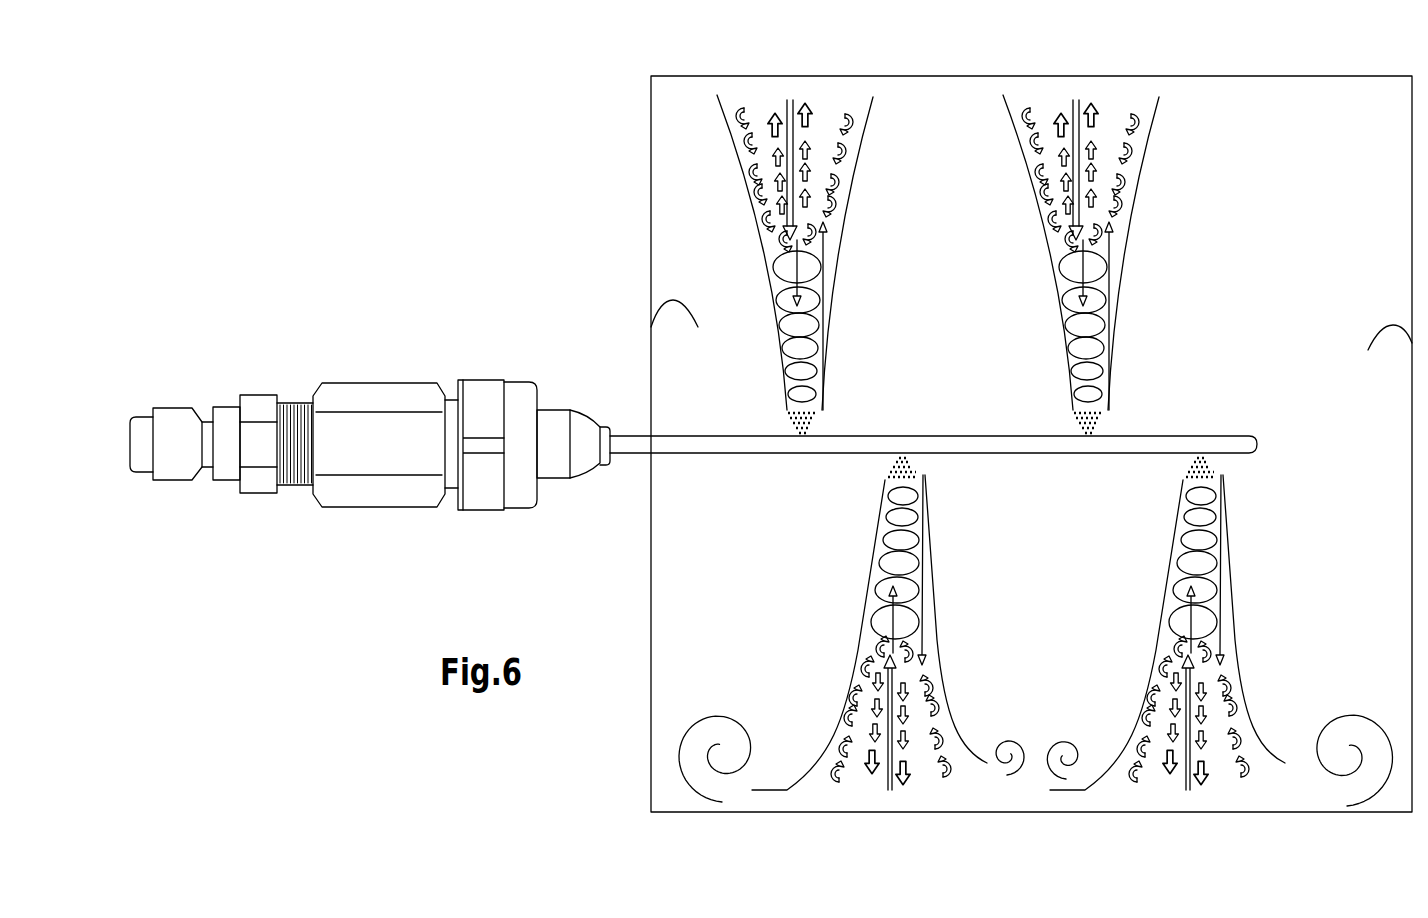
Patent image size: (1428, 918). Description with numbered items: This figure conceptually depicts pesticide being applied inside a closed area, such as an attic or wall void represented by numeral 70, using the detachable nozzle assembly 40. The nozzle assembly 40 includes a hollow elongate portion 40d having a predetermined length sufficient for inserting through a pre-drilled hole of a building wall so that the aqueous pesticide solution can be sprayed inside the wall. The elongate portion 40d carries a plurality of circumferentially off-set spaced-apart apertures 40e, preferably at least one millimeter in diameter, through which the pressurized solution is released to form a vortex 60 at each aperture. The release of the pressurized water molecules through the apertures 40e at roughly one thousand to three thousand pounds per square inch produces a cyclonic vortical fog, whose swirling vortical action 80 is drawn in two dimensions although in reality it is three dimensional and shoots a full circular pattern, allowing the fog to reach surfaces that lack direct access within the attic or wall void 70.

The detachable nozzle assembly 40 is at (383, 363).
The hollow elongate portion 40d is at (1160, 440).
The circumferentially off-set spaced-apart apertures 40e is at (902, 452).
The vortex 60 is at (853, 305).
The attics and wall voids 70 is at (1031, 444).
The swirling vortical action 80 is at (818, 662).